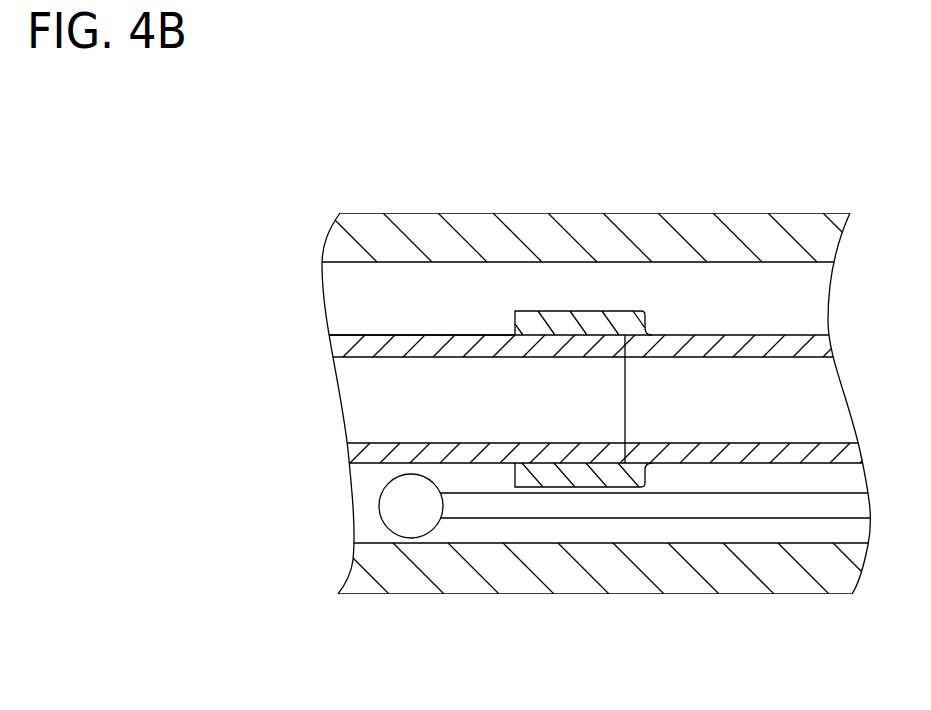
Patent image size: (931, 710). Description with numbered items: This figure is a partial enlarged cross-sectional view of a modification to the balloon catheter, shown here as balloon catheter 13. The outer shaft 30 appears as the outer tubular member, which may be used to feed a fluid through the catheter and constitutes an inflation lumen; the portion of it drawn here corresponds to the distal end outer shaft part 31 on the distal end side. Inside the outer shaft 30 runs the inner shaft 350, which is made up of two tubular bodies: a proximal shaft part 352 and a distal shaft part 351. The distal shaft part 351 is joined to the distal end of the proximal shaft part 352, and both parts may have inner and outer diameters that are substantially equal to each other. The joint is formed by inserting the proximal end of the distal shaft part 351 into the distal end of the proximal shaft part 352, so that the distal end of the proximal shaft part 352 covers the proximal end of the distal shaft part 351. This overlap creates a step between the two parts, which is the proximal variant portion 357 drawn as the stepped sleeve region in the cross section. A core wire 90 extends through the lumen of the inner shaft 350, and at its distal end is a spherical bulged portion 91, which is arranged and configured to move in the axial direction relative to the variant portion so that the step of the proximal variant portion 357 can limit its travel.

The balloon catheter 13 is at (620, 124).
The outer shaft 30 is at (797, 213).
The distal end outer shaft part 31 is at (803, 592).
The inner shaft 350 is at (725, 335).
The distal shaft part 351 is at (382, 335).
The proximal shaft part 352 is at (718, 465).
The proximal variant portion 357 is at (513, 468).
The core wire 90 is at (597, 510).
The bulged portion 91 is at (400, 517).